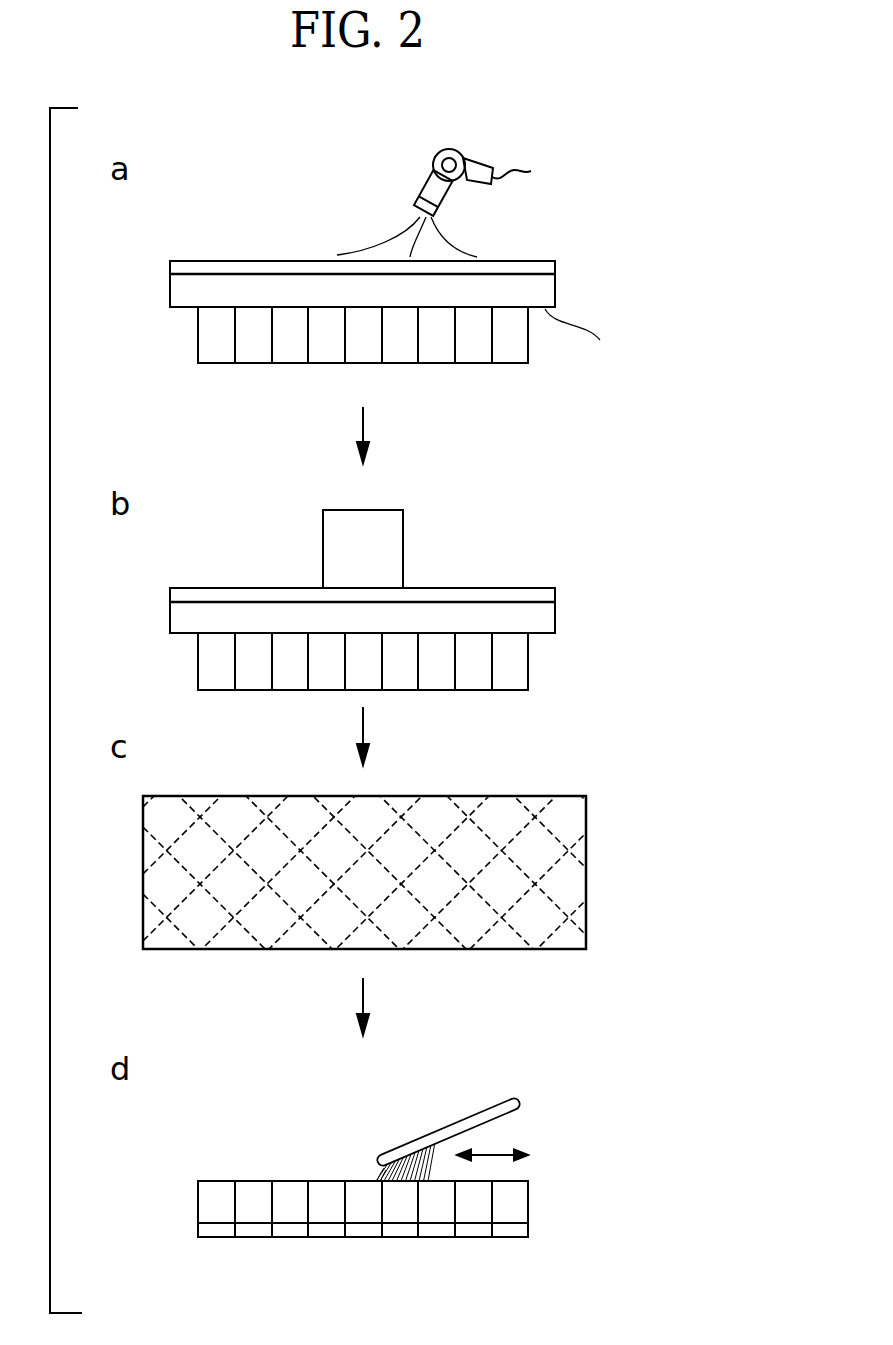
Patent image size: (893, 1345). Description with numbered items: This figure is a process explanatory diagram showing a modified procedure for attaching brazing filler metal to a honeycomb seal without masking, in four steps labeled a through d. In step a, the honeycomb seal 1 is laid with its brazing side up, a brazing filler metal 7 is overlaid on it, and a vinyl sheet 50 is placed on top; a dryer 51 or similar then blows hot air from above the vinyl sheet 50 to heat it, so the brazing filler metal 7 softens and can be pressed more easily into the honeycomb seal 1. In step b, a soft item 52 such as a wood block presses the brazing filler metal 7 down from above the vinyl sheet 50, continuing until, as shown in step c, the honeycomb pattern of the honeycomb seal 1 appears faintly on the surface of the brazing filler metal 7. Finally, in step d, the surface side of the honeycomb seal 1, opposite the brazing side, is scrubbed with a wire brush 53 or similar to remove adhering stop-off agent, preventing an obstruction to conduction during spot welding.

The honeycomb seal 1 is at (198, 337).
The brazing filler metal 7 is at (555, 295).
The vinyl sheet 50 is at (546, 261).
The dryer 51 is at (433, 162).
The soft item 52 is at (403, 543).
The wire brush 53 is at (432, 1136).